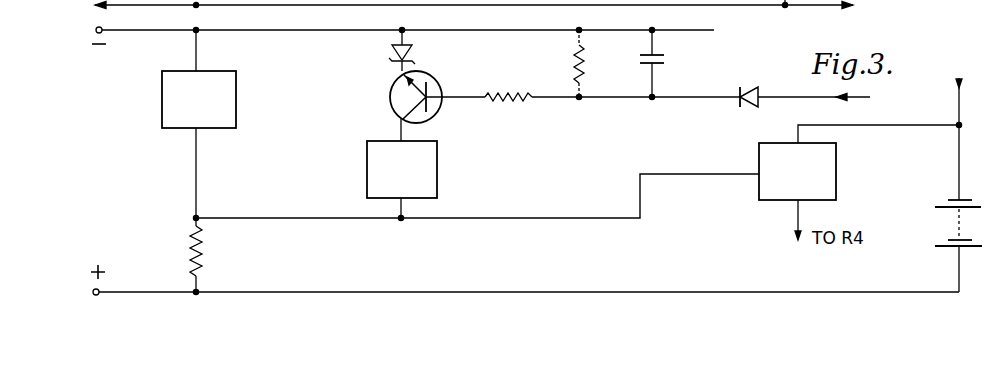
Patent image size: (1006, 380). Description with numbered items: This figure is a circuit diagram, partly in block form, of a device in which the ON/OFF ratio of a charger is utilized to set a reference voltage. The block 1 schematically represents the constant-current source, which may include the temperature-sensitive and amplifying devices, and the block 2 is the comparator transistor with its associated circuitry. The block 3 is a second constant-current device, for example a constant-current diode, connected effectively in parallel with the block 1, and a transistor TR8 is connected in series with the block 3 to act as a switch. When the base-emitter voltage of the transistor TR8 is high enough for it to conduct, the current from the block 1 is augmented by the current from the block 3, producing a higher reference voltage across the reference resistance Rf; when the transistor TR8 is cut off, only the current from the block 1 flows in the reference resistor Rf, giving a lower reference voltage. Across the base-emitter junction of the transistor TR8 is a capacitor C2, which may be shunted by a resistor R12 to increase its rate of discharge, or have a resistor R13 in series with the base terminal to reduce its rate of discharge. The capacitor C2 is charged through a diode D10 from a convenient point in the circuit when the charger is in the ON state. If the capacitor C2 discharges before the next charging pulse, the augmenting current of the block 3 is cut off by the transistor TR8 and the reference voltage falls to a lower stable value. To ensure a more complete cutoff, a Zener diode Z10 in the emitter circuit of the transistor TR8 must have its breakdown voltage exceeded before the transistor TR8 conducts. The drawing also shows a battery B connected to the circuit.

The block 1 is at (199, 99).
The block 2 is at (797, 171).
The block 3 is at (402, 169).
The Zener diode Z10 is at (377, 50).
The transistor TR8 is at (390, 97).
The resistor R12 is at (553, 63).
The resistor R13 is at (612, 110).
The capacitor C2 is at (668, 63).
The diode D10 is at (805, 85).
The reference resistance Rf is at (177, 255).
The battery B is at (952, 246).